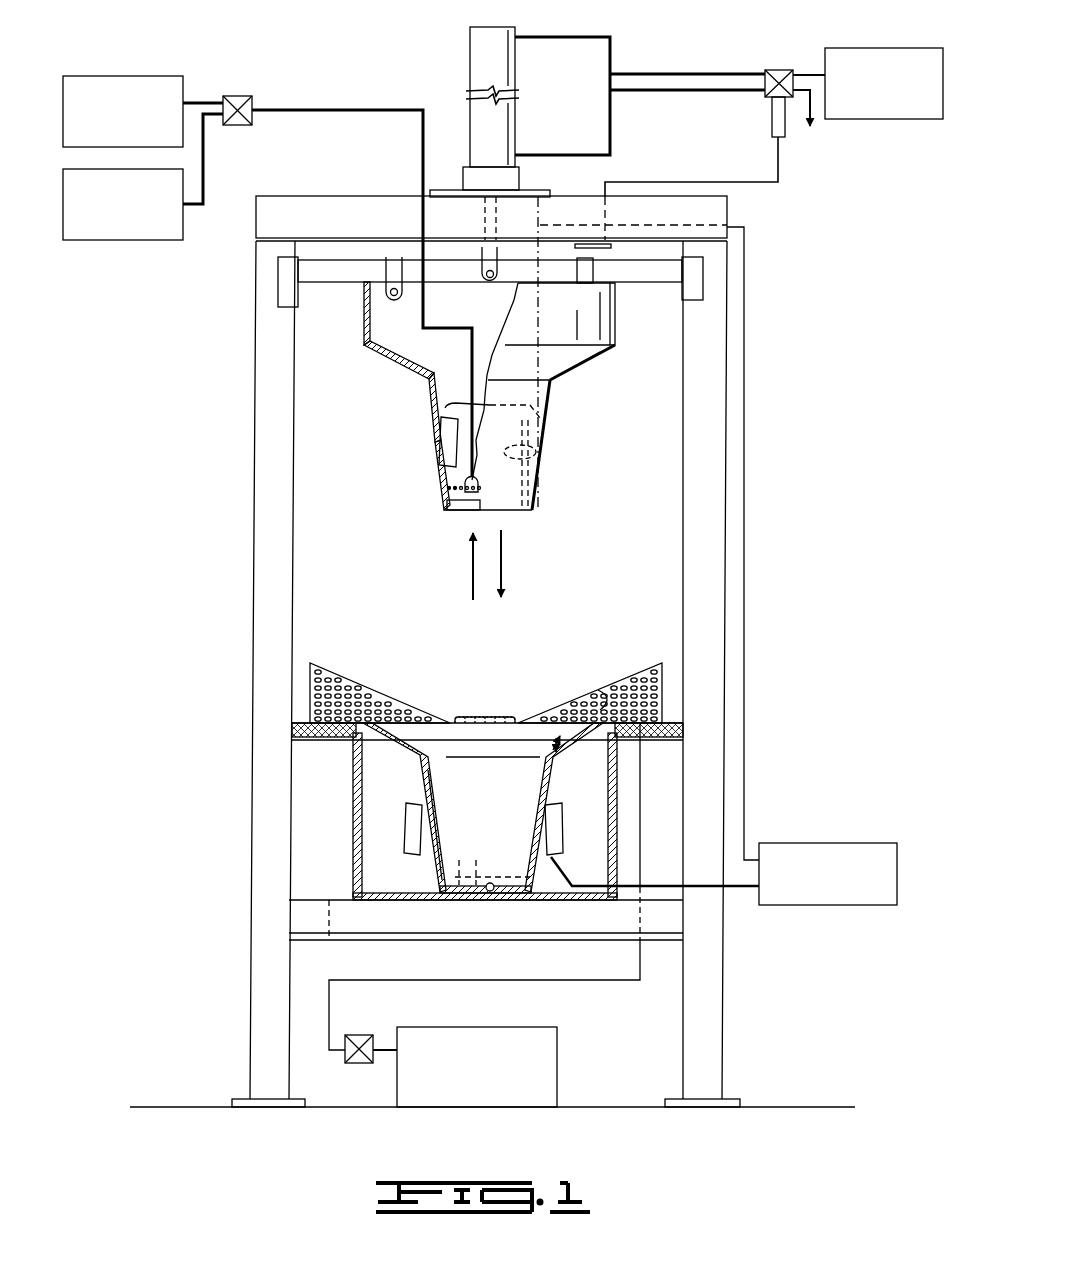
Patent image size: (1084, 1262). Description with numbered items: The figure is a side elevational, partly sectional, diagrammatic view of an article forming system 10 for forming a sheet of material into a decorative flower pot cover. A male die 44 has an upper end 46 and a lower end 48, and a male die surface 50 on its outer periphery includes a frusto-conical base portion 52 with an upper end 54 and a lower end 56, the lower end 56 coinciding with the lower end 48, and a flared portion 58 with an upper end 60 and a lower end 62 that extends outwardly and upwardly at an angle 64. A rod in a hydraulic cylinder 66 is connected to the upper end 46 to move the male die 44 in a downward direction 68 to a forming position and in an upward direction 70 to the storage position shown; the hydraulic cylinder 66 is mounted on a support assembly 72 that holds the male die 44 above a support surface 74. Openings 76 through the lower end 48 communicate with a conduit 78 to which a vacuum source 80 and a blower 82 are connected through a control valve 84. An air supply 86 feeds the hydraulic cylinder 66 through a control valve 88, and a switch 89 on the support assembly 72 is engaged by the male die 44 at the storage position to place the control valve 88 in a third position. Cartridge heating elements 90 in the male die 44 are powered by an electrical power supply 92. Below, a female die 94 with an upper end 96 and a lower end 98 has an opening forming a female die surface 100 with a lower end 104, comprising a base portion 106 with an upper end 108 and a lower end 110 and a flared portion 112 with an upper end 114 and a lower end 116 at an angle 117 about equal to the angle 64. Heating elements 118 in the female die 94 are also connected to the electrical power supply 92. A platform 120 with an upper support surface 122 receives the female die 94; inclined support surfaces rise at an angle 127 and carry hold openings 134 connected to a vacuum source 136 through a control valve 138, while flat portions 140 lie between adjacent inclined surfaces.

The article forming system 10 is at (638, 37).
The male die 44 is at (550, 440).
The upper end of male die 46 is at (590, 342).
The lower end of male die 48 is at (520, 512).
The male die surface 50 is at (445, 410).
The base portion of male die surface 52 is at (438, 453).
The upper end of base portion 54 is at (415, 380).
The lower end of base portion 56 is at (447, 508).
The flared portion of male die surface 58 is at (583, 360).
The upper end of flared portion 60 is at (366, 344).
The lower end of flared portion 62 is at (552, 383).
The angle 64 is at (426, 350).
The hydraulic cylinder 66 is at (470, 48).
The downward direction 68 is at (504, 569).
The upward direction 70 is at (470, 566).
The support assembly 72 is at (254, 364).
The support surface 74 is at (190, 1106).
The openings 76 is at (465, 513).
The conduit 78 is at (331, 116).
The vacuum source 80 is at (114, 241).
The blower 82 is at (122, 76).
The control valve 84 is at (246, 96).
The air supply 86 is at (866, 48).
The control valve 88 is at (779, 70).
The switch 89 is at (611, 240).
The cartridge type heating elements 90 is at (440, 437).
The electrical power supply 92 is at (805, 905).
The female die 94 is at (422, 757).
The upper end of female die 96 is at (364, 737).
The lower end of female die 98 is at (452, 895).
The female die surface 100 is at (430, 787).
The lower end of female die surface 104 is at (492, 892).
The base portion of female die surface 106 is at (435, 806).
The upper end of base portion 108 is at (440, 748).
The lower end of base portion 110 is at (445, 882).
The flared portion of female die surface 112 is at (405, 738).
The upper end of flared portion 114 is at (363, 697).
The lower end of flared portion 116 is at (556, 757).
The angle 117 is at (560, 762).
The cartridge-type heating elements 118 is at (553, 820).
The platform 120 is at (571, 689).
The upper support surface 122 is at (400, 688).
The angle 127 is at (600, 716).
The hold openings 134 is at (318, 692).
The vacuum source 136 is at (515, 1027).
The control valve 138 is at (368, 1035).
The flat portion 140 is at (496, 714).